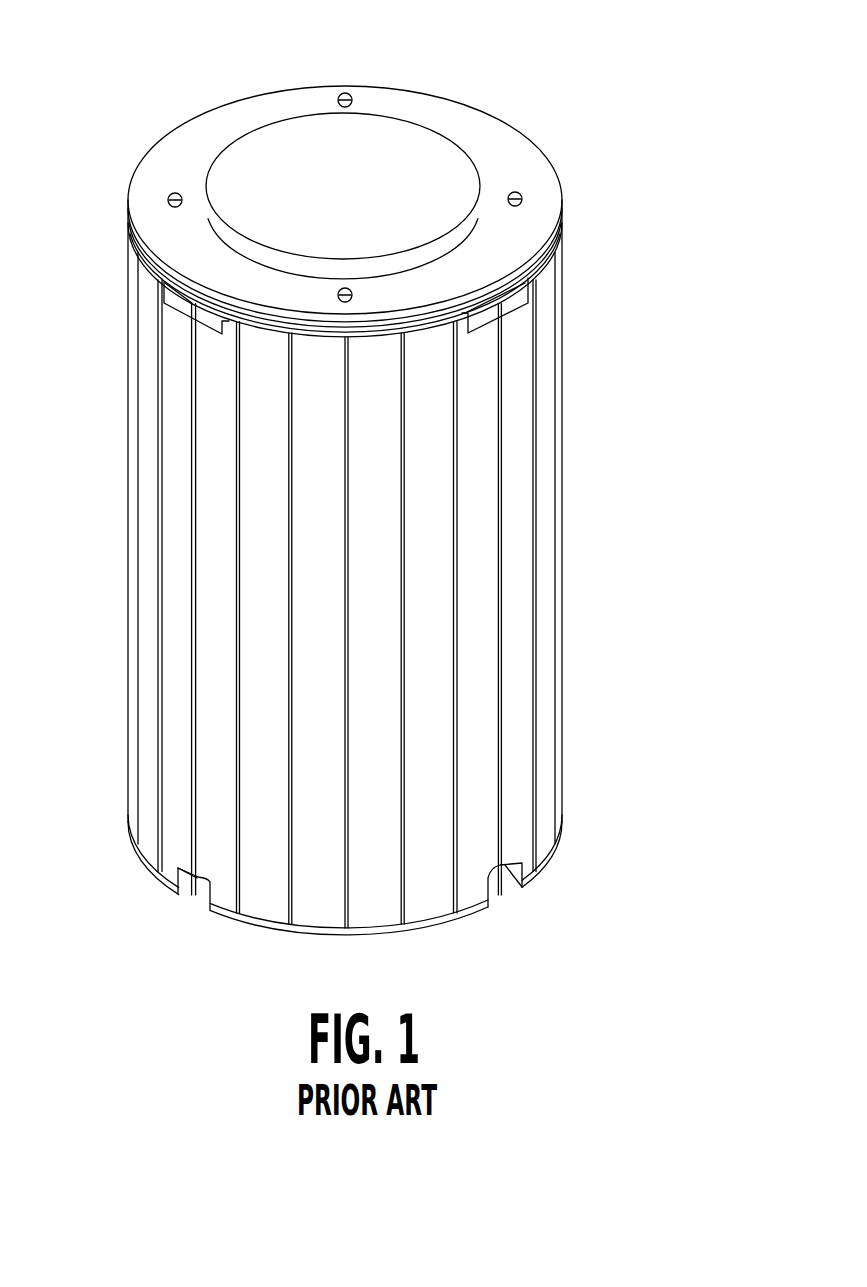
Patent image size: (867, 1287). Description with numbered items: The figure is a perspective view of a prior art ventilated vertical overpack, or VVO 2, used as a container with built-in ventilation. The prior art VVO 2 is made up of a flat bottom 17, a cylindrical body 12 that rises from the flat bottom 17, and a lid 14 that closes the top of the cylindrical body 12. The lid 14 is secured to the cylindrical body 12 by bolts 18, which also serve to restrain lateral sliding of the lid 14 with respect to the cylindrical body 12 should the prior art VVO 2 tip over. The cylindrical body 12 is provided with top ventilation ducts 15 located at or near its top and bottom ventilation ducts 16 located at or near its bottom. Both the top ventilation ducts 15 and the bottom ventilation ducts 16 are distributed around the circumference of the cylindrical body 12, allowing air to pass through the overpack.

The prior art ventilated vertical overpack 2 is at (716, 220).
The cylindrical body 12 is at (542, 598).
The lid 14 is at (527, 167).
The top ventilation ducts 15 is at (207, 312).
The bottom ventilation ducts 16 is at (197, 890).
The flat bottom 17 is at (437, 924).
The bolts 18 is at (180, 193).